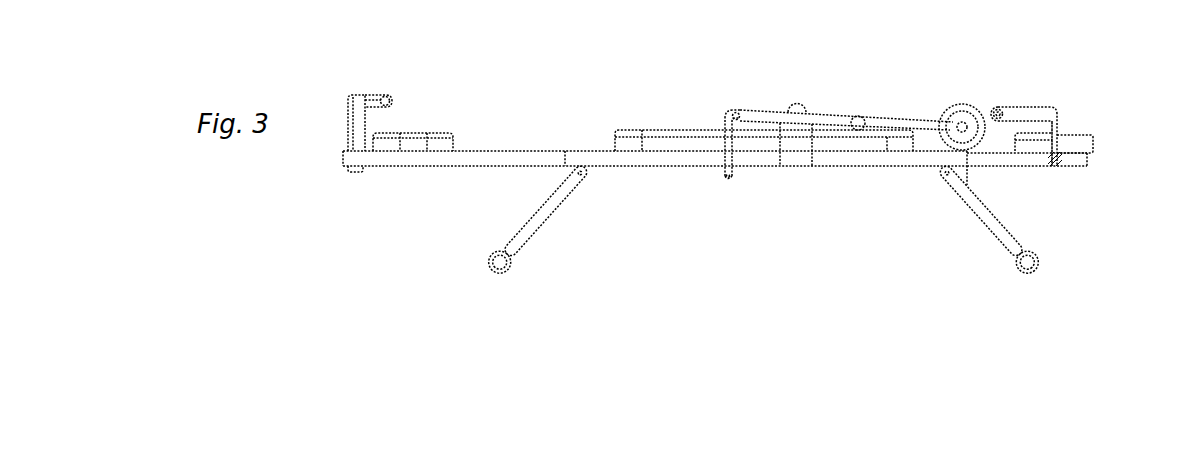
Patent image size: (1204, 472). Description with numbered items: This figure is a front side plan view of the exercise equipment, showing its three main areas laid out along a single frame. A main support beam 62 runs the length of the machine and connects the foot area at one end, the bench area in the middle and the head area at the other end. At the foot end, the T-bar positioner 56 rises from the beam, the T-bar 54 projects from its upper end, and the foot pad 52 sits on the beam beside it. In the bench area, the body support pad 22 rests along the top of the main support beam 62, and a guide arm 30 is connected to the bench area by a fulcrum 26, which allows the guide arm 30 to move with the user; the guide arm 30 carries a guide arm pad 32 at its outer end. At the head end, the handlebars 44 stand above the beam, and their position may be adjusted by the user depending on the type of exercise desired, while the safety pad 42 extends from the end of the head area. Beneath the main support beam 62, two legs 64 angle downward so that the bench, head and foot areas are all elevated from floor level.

The body support pad 22 is at (678, 147).
The fulcrum 26 is at (802, 162).
The guide arm 30 is at (732, 168).
The guide arm pad 32 is at (980, 120).
The safety pad 42 is at (1093, 146).
The handlebars 44 is at (1047, 115).
The foot pad 52 is at (425, 145).
The T-bar 54 is at (372, 100).
The T-bar positioner 56 is at (350, 134).
The main support beam 62 is at (505, 162).
The legs 64 is at (550, 225).